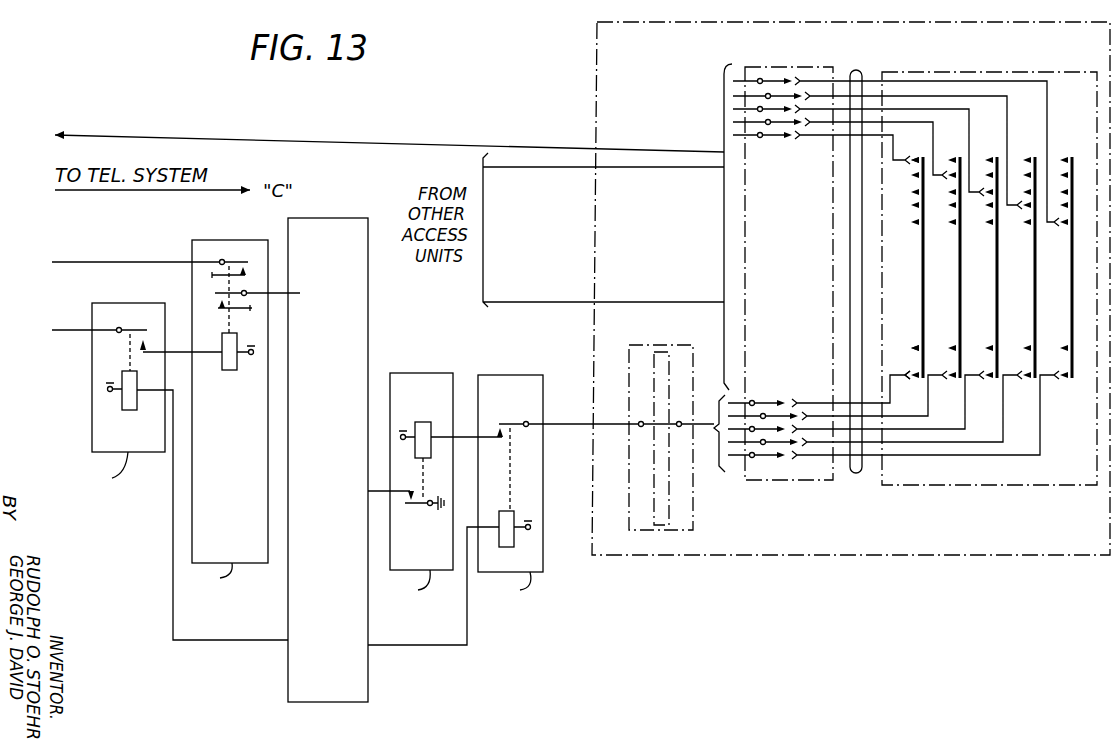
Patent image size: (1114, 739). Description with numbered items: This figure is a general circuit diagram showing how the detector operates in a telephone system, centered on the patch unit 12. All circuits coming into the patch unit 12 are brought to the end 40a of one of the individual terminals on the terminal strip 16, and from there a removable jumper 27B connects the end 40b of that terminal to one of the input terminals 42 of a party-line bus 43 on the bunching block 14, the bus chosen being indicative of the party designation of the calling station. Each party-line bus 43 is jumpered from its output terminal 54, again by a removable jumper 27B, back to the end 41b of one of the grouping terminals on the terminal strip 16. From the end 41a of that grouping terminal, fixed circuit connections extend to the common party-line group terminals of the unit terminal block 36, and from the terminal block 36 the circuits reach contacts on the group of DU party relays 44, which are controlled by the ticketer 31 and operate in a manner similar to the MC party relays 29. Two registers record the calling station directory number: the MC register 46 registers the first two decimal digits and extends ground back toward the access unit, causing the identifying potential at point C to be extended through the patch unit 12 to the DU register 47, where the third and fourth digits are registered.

The patch unit 12 is at (850, 557).
The bunching block 14 is at (989, 264).
The terminal strip 16 is at (893, 258).
The removable jumpers 27B is at (854, 473).
The MC party relays 29 is at (128, 303).
The ticketer 31 is at (338, 218).
The unit terminal block 36 is at (648, 345).
The terminal end 40a is at (762, 137).
The terminal end 40b is at (794, 138).
The grouping terminal end 41a is at (753, 401).
The grouping terminal end 41b is at (785, 401).
The input terminals 42 is at (916, 158).
The party-line bus 43 is at (956, 283).
The DU party relays 44 is at (520, 375).
The MC register 46 is at (222, 240).
The DU register 47 is at (427, 373).
The output terminal 54 is at (914, 378).